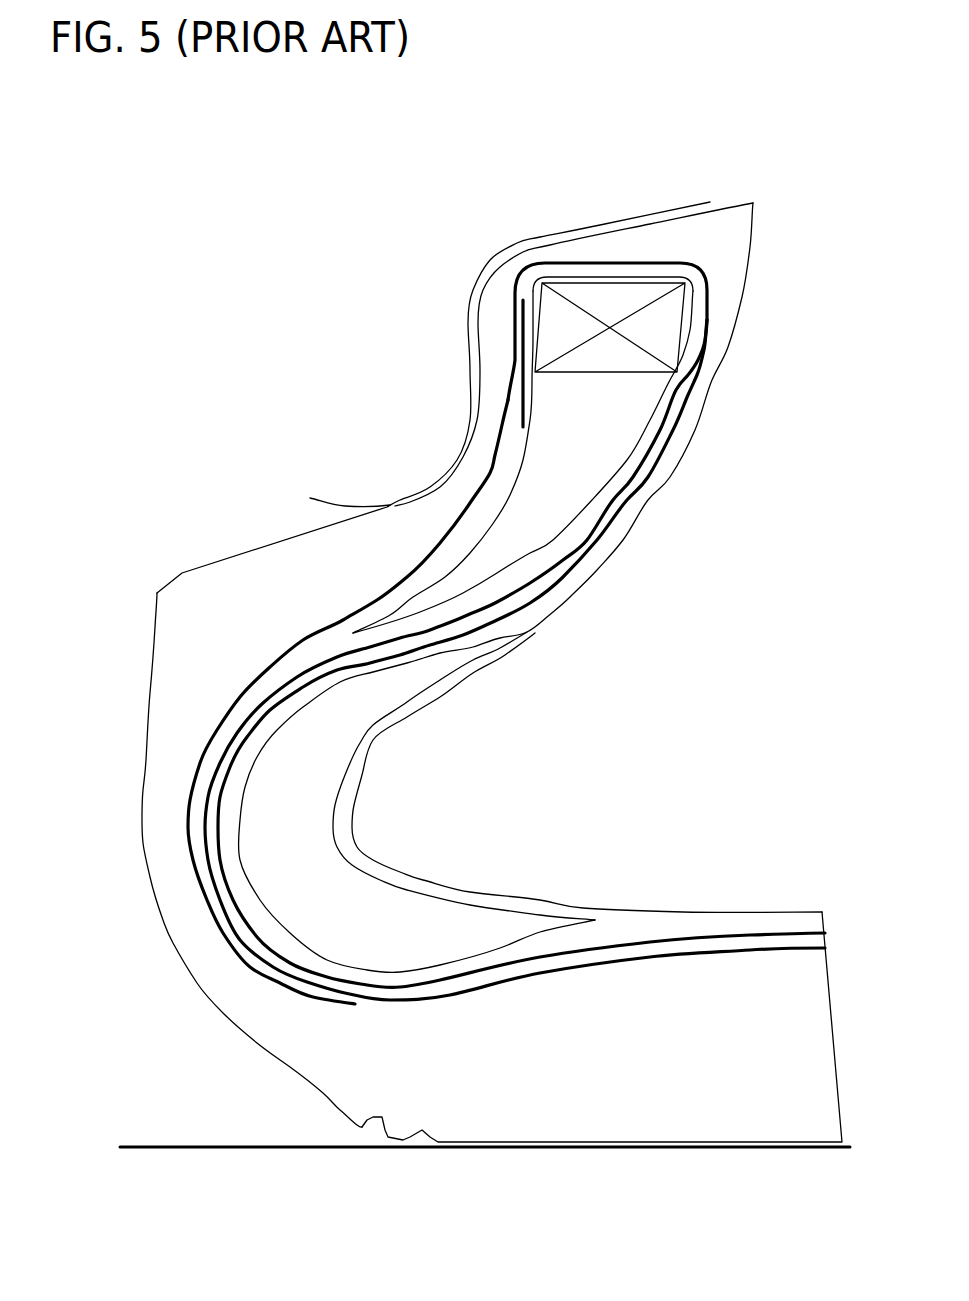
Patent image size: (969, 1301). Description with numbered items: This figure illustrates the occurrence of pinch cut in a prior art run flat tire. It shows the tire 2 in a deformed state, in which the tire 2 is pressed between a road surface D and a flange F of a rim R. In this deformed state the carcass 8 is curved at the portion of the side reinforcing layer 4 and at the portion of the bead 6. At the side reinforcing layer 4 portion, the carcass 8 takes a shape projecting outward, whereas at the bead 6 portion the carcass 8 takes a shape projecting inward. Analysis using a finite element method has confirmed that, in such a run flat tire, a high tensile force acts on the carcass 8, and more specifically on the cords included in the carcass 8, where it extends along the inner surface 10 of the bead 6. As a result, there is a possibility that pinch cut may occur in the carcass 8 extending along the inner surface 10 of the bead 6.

The tire 2 is at (243, 538).
The side reinforcing layer 4 is at (303, 840).
The bead 6 is at (633, 453).
The carcass 8 is at (750, 928).
The inner surface 10 is at (592, 500).
The rim R is at (546, 230).
The flange F is at (379, 500).
The road surface D is at (168, 1147).